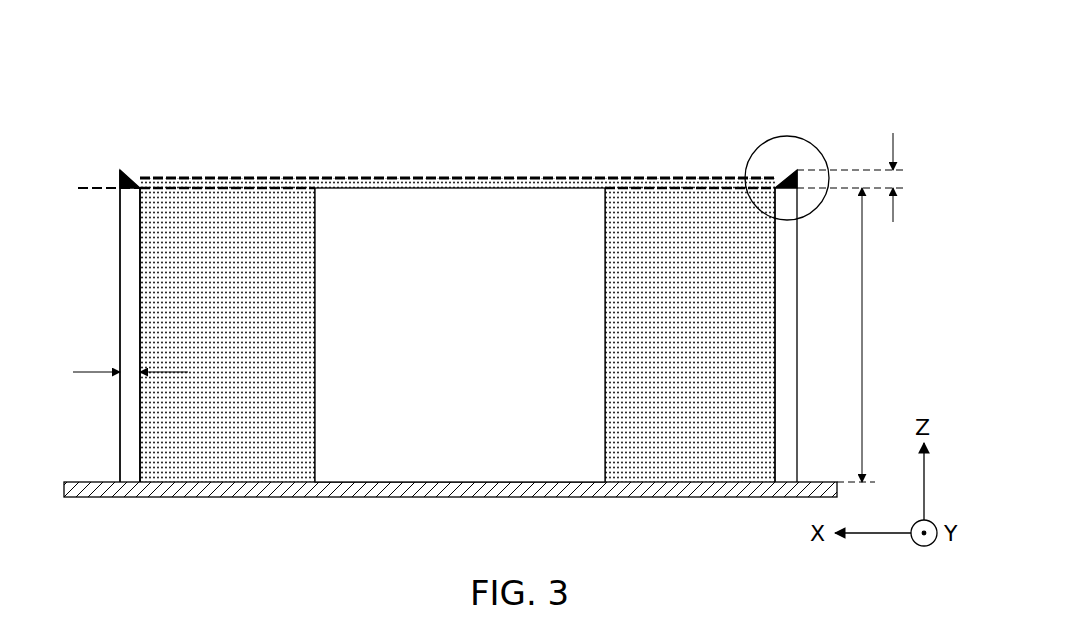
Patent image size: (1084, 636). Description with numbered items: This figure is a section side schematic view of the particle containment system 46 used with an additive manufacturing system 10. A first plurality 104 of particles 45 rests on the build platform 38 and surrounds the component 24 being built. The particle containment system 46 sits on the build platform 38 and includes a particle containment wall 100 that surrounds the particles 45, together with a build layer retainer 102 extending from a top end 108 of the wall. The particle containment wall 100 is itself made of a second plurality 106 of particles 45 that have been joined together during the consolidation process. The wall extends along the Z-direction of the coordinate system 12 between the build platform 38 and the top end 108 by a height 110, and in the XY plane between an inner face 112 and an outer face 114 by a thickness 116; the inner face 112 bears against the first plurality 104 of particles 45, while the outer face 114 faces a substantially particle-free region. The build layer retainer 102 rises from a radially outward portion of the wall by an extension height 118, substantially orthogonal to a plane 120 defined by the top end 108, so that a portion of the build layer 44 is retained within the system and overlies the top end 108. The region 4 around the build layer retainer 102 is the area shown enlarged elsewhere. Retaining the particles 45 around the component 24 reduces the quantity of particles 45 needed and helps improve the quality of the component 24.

The region 4 is at (815, 148).
The additive manufacturing system 10 is at (765, 78).
The coordinate system 12 is at (912, 400).
The component 24 is at (572, 205).
The build platform 38 is at (815, 480).
The build layer 44 is at (415, 178).
The particles 45 is at (678, 205).
The particle containment system 46 is at (205, 80).
The particle containment wall 100 is at (790, 282).
The build layer retainer 102 is at (790, 170).
The first plurality of particles 104 is at (244, 200).
The second plurality of particles 106 is at (130, 217).
The top end 108 is at (136, 164).
The height 110 is at (862, 328).
The inner face 112 is at (150, 248).
The outer face 114 is at (120, 284).
The thickness 116 is at (86, 376).
The extension height 118 is at (893, 142).
The plane 120 is at (107, 187).